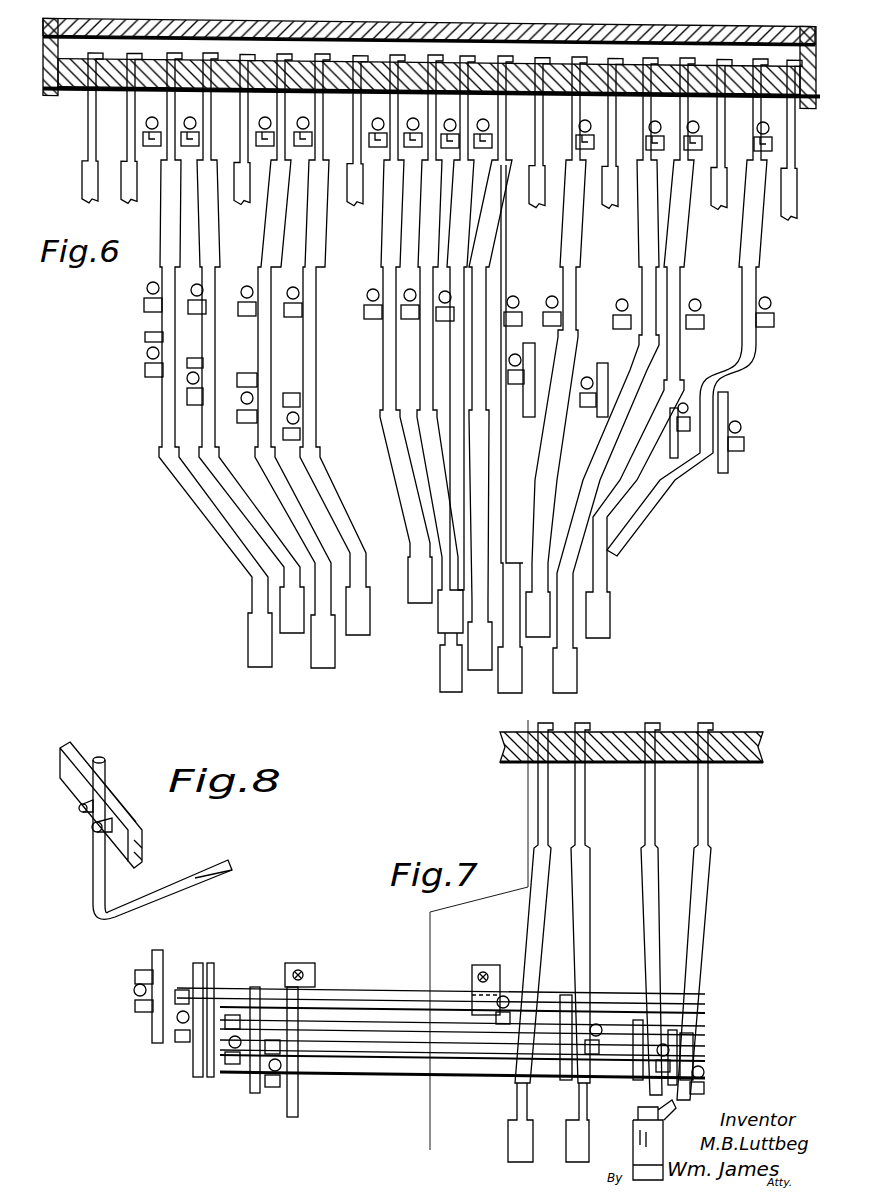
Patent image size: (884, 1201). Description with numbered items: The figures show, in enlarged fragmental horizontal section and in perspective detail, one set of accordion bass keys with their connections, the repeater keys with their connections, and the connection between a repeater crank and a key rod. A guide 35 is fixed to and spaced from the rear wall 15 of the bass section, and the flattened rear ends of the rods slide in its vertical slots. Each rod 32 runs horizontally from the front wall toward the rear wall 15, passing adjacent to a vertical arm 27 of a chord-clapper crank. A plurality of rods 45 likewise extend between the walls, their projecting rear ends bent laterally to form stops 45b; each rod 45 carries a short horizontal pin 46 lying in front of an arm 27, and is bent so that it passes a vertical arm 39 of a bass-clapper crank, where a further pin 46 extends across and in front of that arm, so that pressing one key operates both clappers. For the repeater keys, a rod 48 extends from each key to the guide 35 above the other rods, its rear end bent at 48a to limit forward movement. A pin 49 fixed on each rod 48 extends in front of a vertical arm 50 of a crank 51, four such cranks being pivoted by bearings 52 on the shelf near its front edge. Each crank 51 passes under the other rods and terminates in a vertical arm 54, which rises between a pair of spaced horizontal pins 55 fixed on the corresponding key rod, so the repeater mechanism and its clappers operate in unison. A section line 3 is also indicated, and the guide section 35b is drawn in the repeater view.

In FIG. 6, the rear wall 15 is at (262, 22).
In FIG. 6, the guide 35 is at (412, 78).
In FIG. 7, the comb bar 35b is at (620, 765).
In FIG. 6, the rod 45 is at (390, 256).
In FIG. 8, the rod 45 is at (68, 745).
In FIG. 7, the rod 45 is at (152, 1040).
In FIG. 6, the stop 45b is at (640, 60).
In FIG. 6, the arm of crank 27 is at (236, 123).
In FIG. 6, the horizontal pin 46 is at (188, 147).
In FIG. 6, the rod 32 is at (95, 196).
In FIG. 6, the arm of crank 39 is at (147, 288).
In FIG. 6, the pins 55 is at (147, 338).
In FIG. 8, the pins 55 is at (95, 830).
In FIG. 7, the pins 55 is at (135, 975).
In FIG. 6, the vertical arm 54 is at (147, 357).
In FIG. 8, the vertical arm 54 is at (95, 897).
In FIG. 7, the vertical arm 54 is at (135, 990).
In FIG. 6, the vertical arm 50 is at (584, 378).
In FIG. 7, the vertical arm 50 is at (503, 995).
In FIG. 6, the rod 48 is at (597, 418).
In FIG. 7, the bent end 48a is at (712, 725).
In FIG. 6, the pin 49 is at (735, 475).
In FIG. 7, the pin 49 is at (580, 930).
In FIG. 8, the crank 51 is at (200, 878).
In FIG. 7, the crank 51 is at (401, 1050).
In FIG. 7, the bearings 52 is at (308, 963).
In FIG. 7, the section line 3 is at (525, 716).